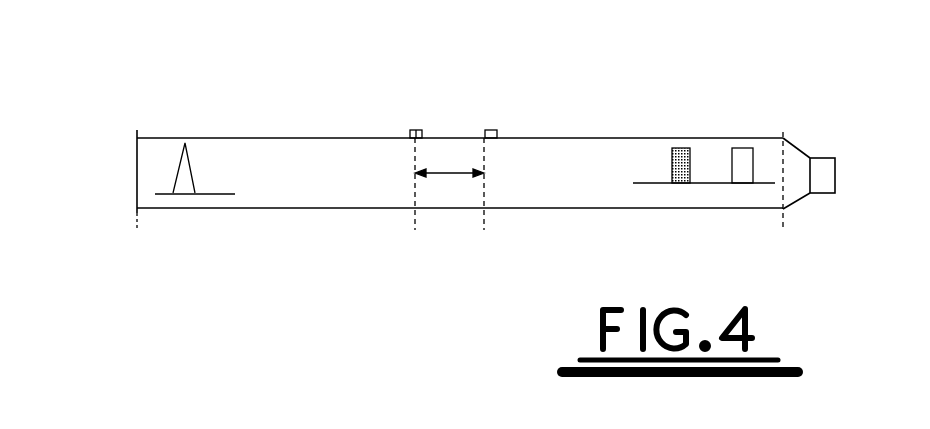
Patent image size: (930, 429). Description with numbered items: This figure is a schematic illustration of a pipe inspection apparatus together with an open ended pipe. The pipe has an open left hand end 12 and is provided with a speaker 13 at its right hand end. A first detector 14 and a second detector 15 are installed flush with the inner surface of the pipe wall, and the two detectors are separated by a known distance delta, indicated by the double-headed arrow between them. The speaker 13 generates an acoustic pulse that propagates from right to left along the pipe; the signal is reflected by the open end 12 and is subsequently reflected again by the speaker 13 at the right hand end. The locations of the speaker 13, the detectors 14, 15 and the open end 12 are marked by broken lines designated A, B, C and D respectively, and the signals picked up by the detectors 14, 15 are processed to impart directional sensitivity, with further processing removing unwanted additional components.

The open left hand end 12 is at (135, 157).
The speaker 13 is at (805, 158).
The first detector 14 is at (485, 130).
The second detector 15 is at (412, 130).